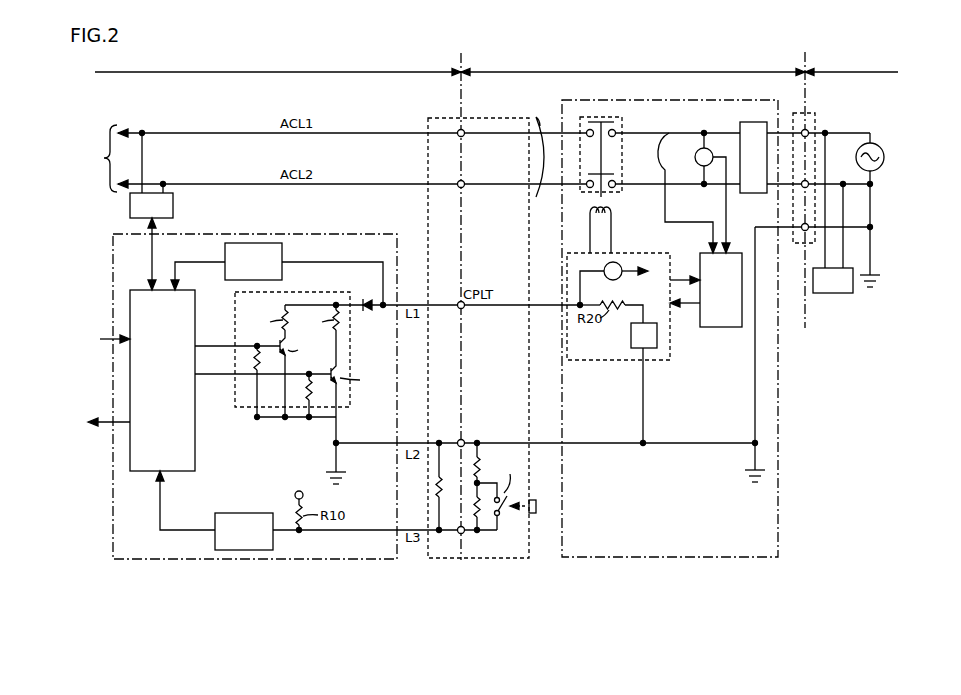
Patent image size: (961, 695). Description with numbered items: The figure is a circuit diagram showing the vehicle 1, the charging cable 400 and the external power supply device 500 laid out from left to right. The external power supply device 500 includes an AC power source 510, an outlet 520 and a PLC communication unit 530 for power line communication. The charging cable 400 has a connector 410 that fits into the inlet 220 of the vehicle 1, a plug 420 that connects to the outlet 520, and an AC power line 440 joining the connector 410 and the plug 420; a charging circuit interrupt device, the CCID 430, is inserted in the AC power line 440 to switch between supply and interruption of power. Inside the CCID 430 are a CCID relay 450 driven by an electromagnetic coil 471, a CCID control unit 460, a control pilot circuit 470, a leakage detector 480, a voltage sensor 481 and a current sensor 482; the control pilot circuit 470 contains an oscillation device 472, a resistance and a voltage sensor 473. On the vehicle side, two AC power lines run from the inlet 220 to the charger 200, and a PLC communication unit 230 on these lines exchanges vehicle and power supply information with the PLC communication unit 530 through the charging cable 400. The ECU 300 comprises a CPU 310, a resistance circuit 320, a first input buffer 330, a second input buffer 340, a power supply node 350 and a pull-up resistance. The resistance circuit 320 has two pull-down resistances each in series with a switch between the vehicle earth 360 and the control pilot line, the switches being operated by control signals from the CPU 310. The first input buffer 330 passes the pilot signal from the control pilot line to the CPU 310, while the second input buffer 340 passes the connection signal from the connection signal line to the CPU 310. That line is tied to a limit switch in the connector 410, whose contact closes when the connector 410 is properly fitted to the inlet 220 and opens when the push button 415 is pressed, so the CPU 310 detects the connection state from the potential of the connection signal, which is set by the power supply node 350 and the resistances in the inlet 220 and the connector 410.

The vehicle 1 is at (278, 64).
The charger 200 is at (332, 158).
The PLC communication unit 230 is at (173, 207).
The ECU 300 is at (365, 236).
The CPU 310 is at (175, 471).
The resistance circuit 320 is at (310, 292).
The input buffer 330 is at (252, 243).
The input buffer 340 is at (245, 513).
The power supply node 350 is at (299, 490).
The vehicle earth 360 is at (343, 472).
The inlet 220 is at (440, 118).
The charging cable 400 is at (633, 64).
The connector 410 is at (475, 118).
The push button 415 is at (533, 500).
The AC power line 440 is at (542, 118).
The charging circuit interrupt device (CCID) 430 is at (722, 100).
The CCID relay 450 is at (612, 117).
The electromagnetic coil 471 is at (612, 210).
The CCID control unit 460 is at (720, 327).
The control pilot circuit 470 is at (630, 253).
The oscillation device 472 is at (629, 337).
The voltage sensor 473 is at (620, 279).
The leakage detector 480 is at (752, 193).
The voltage sensor 481 is at (697, 164).
The current sensor 482 is at (668, 120).
The plug 420 is at (797, 113).
The external power supply device 500 is at (875, 57).
The outlet 520 is at (815, 113).
The AC power source 510 is at (881, 146).
The PLC communication unit 530 is at (835, 293).